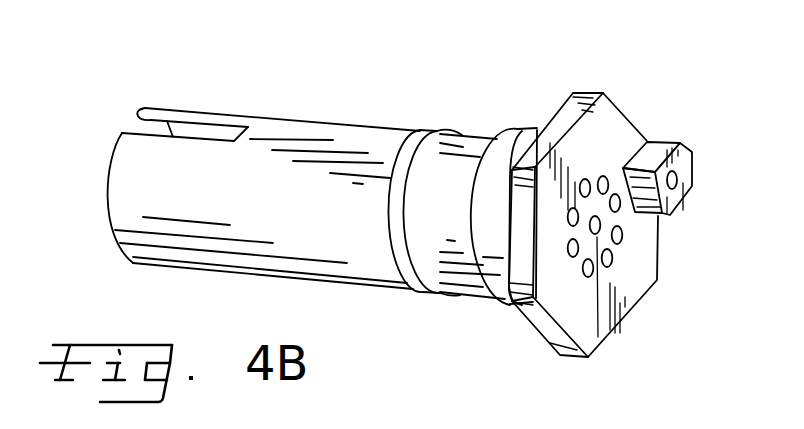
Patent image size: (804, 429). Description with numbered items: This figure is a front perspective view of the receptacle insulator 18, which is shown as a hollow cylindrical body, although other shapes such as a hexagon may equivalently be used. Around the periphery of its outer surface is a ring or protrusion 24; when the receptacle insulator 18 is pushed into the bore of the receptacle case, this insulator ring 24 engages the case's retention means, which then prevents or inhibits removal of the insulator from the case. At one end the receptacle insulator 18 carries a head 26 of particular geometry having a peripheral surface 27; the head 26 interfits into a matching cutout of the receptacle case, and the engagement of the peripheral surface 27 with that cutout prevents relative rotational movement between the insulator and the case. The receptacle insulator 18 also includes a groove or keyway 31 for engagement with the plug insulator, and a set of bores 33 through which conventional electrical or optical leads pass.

The receptacle insulator 18 is at (353, 113).
The groove or keyway 31 is at (152, 110).
The ring or protrusion 24 is at (434, 129).
The peripheral surface 27 is at (514, 238).
The head 26 is at (587, 92).
The bores 33 is at (607, 178).